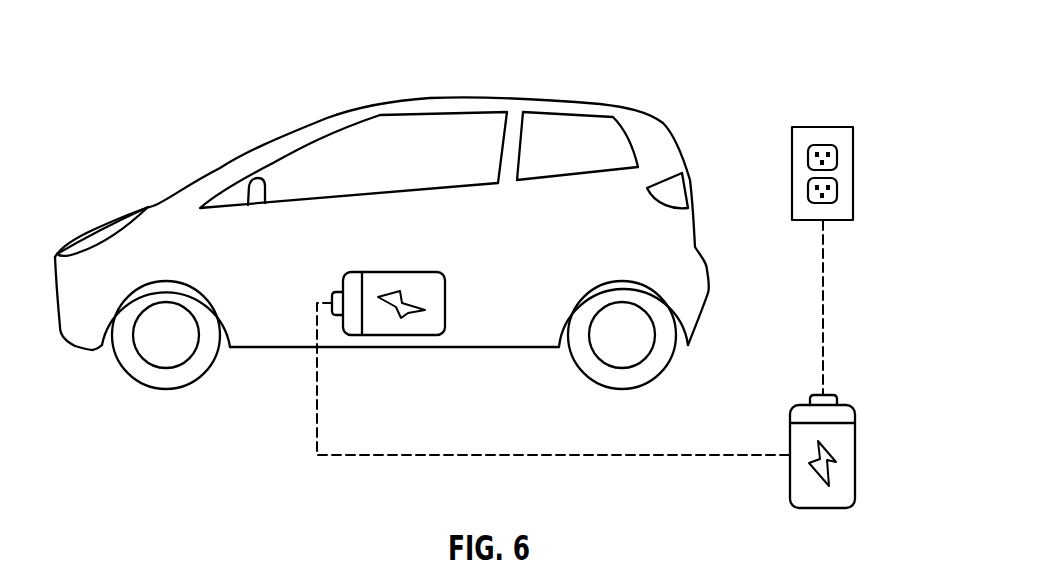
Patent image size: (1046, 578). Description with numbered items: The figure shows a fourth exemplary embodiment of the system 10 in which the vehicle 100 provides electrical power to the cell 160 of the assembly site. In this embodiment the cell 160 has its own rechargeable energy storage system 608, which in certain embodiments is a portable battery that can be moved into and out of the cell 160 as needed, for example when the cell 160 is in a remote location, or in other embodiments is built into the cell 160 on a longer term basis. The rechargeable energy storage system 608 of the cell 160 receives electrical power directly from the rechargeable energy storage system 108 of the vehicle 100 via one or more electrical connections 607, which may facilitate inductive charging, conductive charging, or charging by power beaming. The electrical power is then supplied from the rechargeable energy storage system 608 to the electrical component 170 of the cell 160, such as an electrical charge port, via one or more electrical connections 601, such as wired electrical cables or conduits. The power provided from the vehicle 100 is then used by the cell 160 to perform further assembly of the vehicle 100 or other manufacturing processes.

The system 10 is at (126, 59).
The vehicle 100 is at (220, 168).
The rechargeable energy storage system of the vehicle 108 is at (401, 336).
The cell 160 is at (288, 425).
The electrical component 170 is at (853, 174).
The electrical connections 601 is at (823, 308).
The electrical connections 607 is at (755, 453).
The rechargeable energy storage system of the cell 608 is at (855, 455).